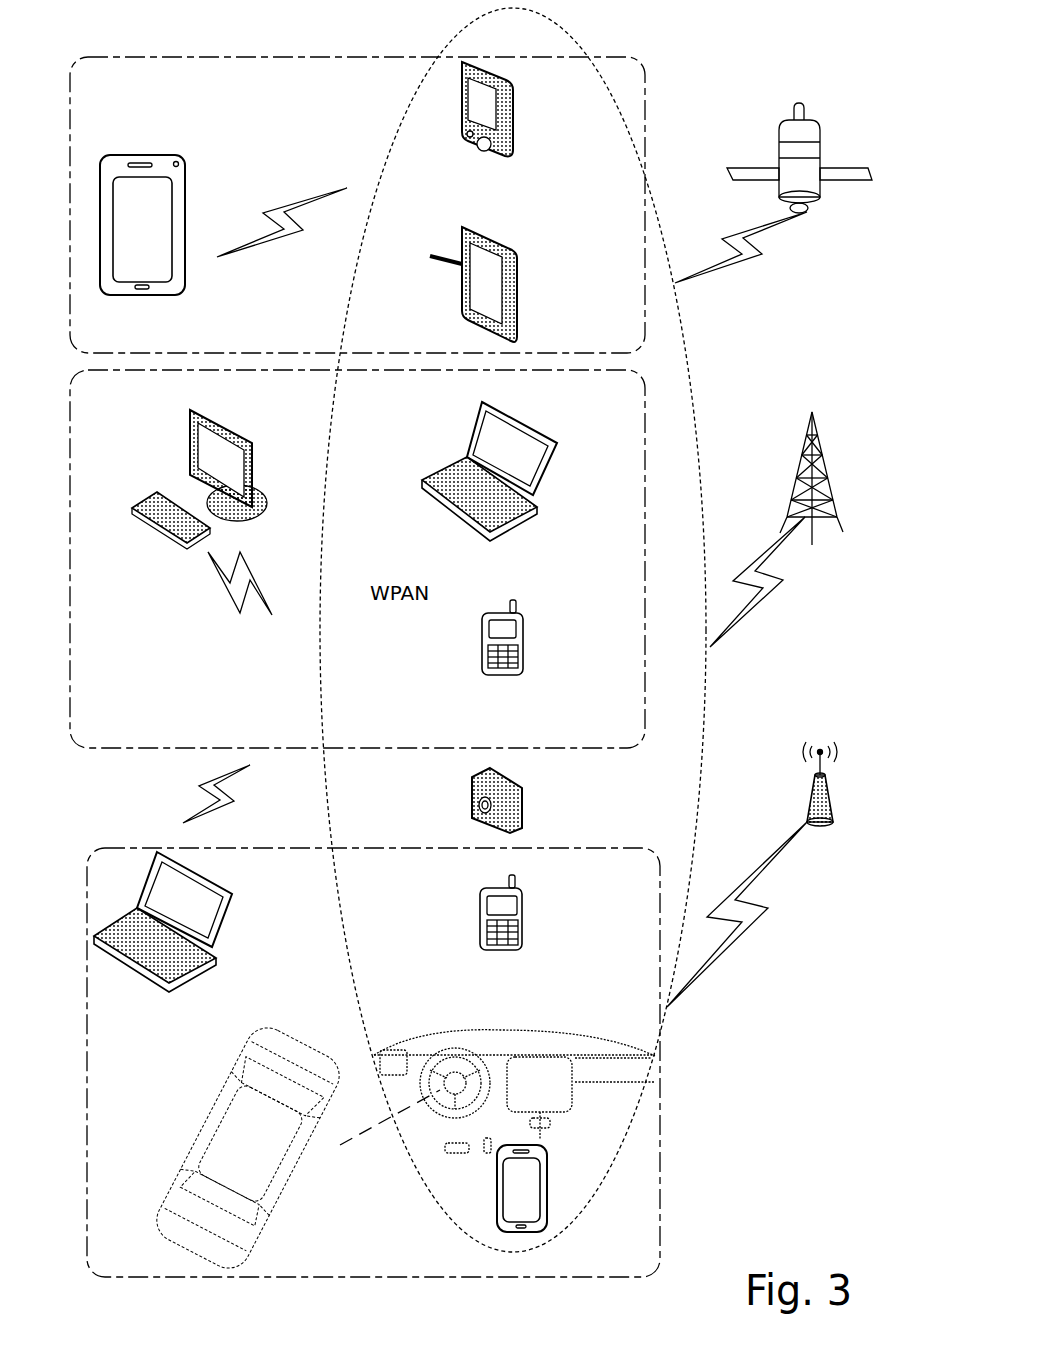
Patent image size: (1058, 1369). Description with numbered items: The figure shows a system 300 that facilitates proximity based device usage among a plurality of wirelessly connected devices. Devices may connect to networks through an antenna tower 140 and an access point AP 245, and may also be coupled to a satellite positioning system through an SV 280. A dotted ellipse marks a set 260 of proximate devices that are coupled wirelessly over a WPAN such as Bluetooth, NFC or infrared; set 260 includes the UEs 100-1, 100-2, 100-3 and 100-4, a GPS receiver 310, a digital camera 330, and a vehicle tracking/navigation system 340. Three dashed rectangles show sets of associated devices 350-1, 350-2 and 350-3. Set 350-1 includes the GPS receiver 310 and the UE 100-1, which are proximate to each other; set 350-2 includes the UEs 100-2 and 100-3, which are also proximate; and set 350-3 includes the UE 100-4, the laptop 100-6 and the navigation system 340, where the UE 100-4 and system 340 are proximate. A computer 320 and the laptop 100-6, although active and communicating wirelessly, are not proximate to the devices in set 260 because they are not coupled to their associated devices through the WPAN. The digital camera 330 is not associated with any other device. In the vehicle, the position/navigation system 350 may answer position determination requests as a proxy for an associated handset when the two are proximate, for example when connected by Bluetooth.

The system 300 is at (174, 15).
The set of associated devices 350-1 is at (357, 205).
The set of associated devices 350-2 is at (357, 559).
The set of associated devices 350-3 is at (373, 1062).
The set of proximate devices 260 is at (574, 38).
The GPS receiver 310 is at (517, 108).
The UE 100-1 is at (520, 302).
The SV 280 is at (822, 150).
The computer 320 is at (215, 479).
The UE 100-2 is at (540, 423).
The UE 100-3 is at (527, 642).
The cellular base station tower 140 is at (800, 474).
The digital camera 330 is at (524, 788).
The AP 245 is at (808, 793).
The laptop 100-6 is at (187, 868).
The UE 100-4 is at (525, 915).
The position/navigation system 350 is at (248, 1148).
The vehicle tracking/navigation system 340 is at (514, 1082).